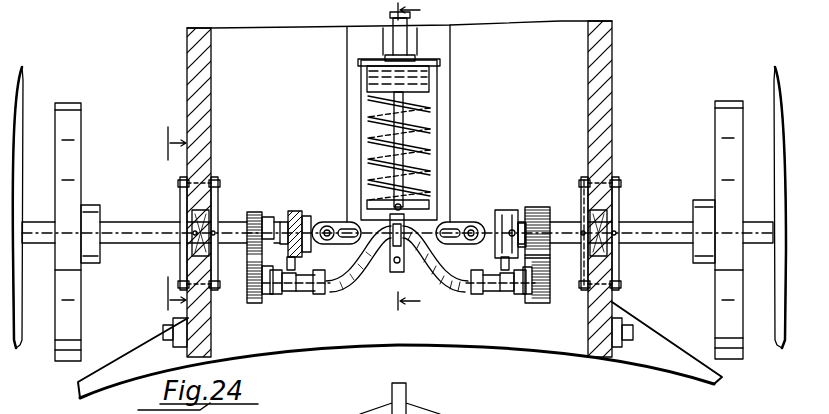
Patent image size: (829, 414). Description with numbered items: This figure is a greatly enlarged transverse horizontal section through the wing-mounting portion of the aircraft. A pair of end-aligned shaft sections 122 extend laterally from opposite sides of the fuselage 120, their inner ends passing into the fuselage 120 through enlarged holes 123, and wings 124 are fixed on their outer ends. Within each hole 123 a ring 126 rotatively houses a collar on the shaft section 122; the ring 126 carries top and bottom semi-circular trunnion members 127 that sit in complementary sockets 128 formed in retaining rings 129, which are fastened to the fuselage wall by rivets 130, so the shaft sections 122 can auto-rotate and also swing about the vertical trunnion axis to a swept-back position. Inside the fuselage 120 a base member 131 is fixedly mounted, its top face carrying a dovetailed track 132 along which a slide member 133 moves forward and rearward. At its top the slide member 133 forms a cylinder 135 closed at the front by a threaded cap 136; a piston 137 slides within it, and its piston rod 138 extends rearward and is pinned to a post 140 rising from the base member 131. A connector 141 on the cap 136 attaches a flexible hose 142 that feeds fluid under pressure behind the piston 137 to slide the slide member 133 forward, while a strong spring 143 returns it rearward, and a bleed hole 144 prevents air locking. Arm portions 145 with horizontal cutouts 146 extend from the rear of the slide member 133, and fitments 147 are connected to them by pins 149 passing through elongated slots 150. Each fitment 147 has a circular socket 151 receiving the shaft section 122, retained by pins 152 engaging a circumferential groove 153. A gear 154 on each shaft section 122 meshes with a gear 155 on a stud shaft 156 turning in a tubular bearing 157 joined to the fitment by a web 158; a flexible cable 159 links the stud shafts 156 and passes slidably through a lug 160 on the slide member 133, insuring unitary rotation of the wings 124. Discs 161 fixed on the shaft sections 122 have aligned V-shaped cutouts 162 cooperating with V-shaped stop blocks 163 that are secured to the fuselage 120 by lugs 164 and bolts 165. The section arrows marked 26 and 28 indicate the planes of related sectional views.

The section line 26- 26 is at (163, 219).
The section line 28- 28 is at (396, 155).
The fuselage 120 is at (605, 58).
The shaft section 122 is at (33, 215).
The hole 123 is at (215, 292).
The wing 124 is at (26, 82).
The ring 126 is at (190, 223).
The trunnion member 127 is at (182, 250).
The socket 128 is at (214, 222).
The retaining ring 129 is at (180, 178).
The rivet 130 is at (180, 185).
The base member 131 is at (450, 162).
The dovetailed track 132 is at (407, 40).
The slide member 133 is at (438, 98).
The cylinder 135 is at (368, 122).
The cap 136 is at (440, 62).
The piston 137 is at (370, 84).
The piston rod 138 is at (403, 262).
The post 140 is at (410, 250).
The connector 141 is at (383, 52).
The flexible hose 142 is at (408, 20).
The spring 143 is at (404, 128).
The bleed hole 144 is at (404, 202).
The arm portion 145 is at (340, 246).
The cutout 146 is at (455, 246).
The fitment 147 is at (290, 202).
The pin 149 is at (329, 225).
The elongated slot 150 is at (305, 214).
The socket 151 is at (530, 225).
The pin 152 is at (309, 214).
The circumferential groove 153 is at (293, 210).
The gear 154 is at (583, 184).
The gear 155 is at (253, 305).
The stud shaft 156 is at (305, 297).
The tubular bearing 157 is at (522, 304).
The web 158 is at (287, 297).
The flexible cable 159 is at (332, 292).
The lug 160 is at (402, 207).
The disc 161 is at (75, 118).
The V-shaped cutout 162 is at (78, 303).
The stop block 163 is at (126, 368).
The lug 164 is at (188, 354).
The bolt 165 is at (166, 334).